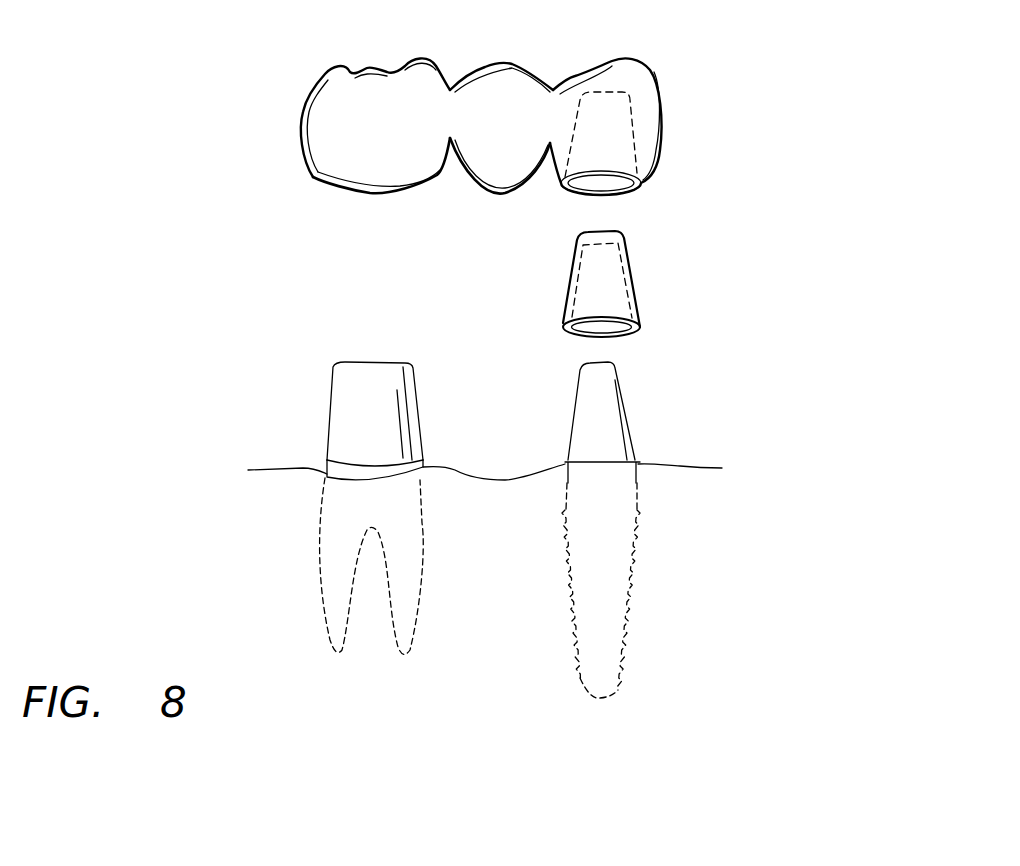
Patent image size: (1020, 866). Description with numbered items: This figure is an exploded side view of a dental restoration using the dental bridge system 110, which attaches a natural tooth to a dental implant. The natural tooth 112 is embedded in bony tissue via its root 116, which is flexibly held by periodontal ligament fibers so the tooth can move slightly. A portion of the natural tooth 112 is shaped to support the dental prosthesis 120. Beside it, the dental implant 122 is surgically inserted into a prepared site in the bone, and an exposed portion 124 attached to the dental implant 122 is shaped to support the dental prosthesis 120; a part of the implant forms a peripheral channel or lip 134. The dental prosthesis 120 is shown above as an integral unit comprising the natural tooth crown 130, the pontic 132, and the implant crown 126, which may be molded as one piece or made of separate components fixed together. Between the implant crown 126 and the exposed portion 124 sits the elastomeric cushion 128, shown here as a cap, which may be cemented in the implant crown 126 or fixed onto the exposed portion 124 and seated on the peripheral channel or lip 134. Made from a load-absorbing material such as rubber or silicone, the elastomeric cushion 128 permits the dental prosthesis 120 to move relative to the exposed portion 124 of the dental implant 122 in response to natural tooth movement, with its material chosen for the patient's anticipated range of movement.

The dental bridge system 110 is at (703, 226).
The natural tooth 112 is at (350, 417).
The root 116 is at (340, 518).
The dental prosthesis 120 is at (440, 37).
The dental implant 122 is at (660, 440).
The exposed portion 124 is at (603, 410).
The implant crown 126 is at (643, 108).
The elastomeric cushion 128 is at (637, 283).
The natural tooth crown 130 is at (323, 100).
The pontic 132 is at (523, 90).
The peripheral channel or lip 134 is at (588, 460).